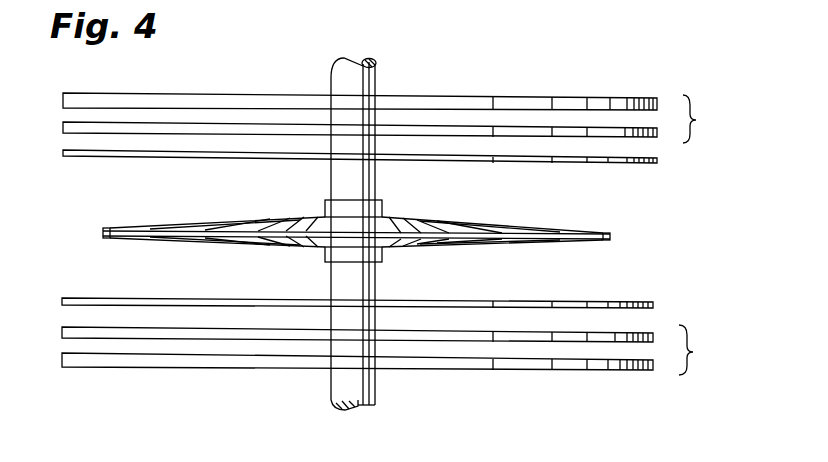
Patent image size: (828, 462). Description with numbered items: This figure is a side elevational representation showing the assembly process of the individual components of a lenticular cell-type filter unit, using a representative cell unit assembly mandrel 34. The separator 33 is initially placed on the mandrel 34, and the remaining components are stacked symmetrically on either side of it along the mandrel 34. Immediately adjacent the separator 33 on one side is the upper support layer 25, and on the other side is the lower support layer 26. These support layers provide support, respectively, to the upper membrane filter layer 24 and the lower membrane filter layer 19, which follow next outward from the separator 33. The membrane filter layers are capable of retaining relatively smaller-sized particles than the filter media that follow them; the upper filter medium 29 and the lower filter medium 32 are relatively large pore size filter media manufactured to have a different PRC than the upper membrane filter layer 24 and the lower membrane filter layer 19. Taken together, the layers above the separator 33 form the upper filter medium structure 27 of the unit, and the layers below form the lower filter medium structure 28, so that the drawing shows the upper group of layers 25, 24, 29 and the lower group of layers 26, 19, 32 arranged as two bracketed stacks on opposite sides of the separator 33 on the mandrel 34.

The lower membrane filter layer 19 is at (598, 342).
The upper membrane filter layer 24 is at (582, 128).
The upper support layer 25 is at (523, 157).
The lower support layer 26 is at (542, 308).
The upper filter medium structure 27 is at (401, 104).
The lower filter medium structure 28 is at (400, 359).
The first upper filter medium layer 29 is at (625, 97).
The first lower filter medium layer 32 is at (647, 372).
The separator element 33 is at (596, 249).
The cell unit assembly mandrel 34 is at (341, 380).